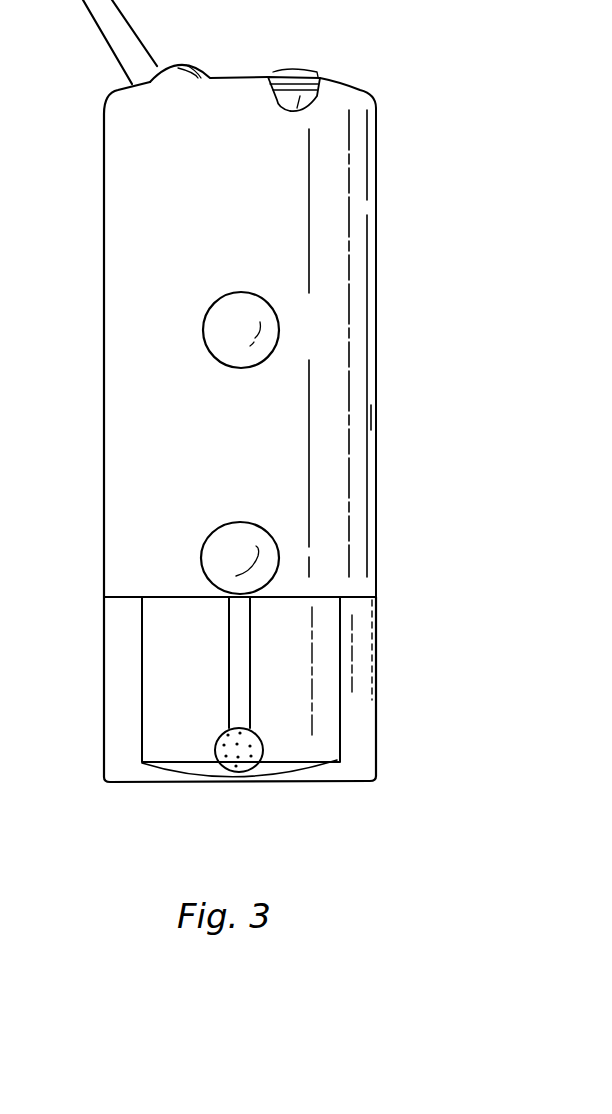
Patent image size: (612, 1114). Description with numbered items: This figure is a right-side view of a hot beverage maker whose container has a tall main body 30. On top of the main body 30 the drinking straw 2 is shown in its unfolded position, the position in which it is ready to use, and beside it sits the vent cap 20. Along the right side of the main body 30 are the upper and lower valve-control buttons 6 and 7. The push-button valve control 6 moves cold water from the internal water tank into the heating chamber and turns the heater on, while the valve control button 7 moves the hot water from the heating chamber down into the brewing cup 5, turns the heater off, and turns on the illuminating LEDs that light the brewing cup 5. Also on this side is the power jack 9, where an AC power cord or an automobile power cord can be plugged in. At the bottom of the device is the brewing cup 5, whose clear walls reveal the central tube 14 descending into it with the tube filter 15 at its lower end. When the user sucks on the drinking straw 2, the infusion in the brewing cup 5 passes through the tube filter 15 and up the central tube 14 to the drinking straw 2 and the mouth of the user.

The drinking straw 2 is at (133, 52).
The vent cap 20 is at (320, 78).
The main body 30 is at (377, 208).
The push-button valve control 6 is at (246, 309).
The power jack 9 is at (377, 417).
The valve control button 7 is at (243, 535).
The brewing cup 5 is at (180, 705).
The central tube 14 is at (237, 688).
The tube filter 15 is at (253, 750).